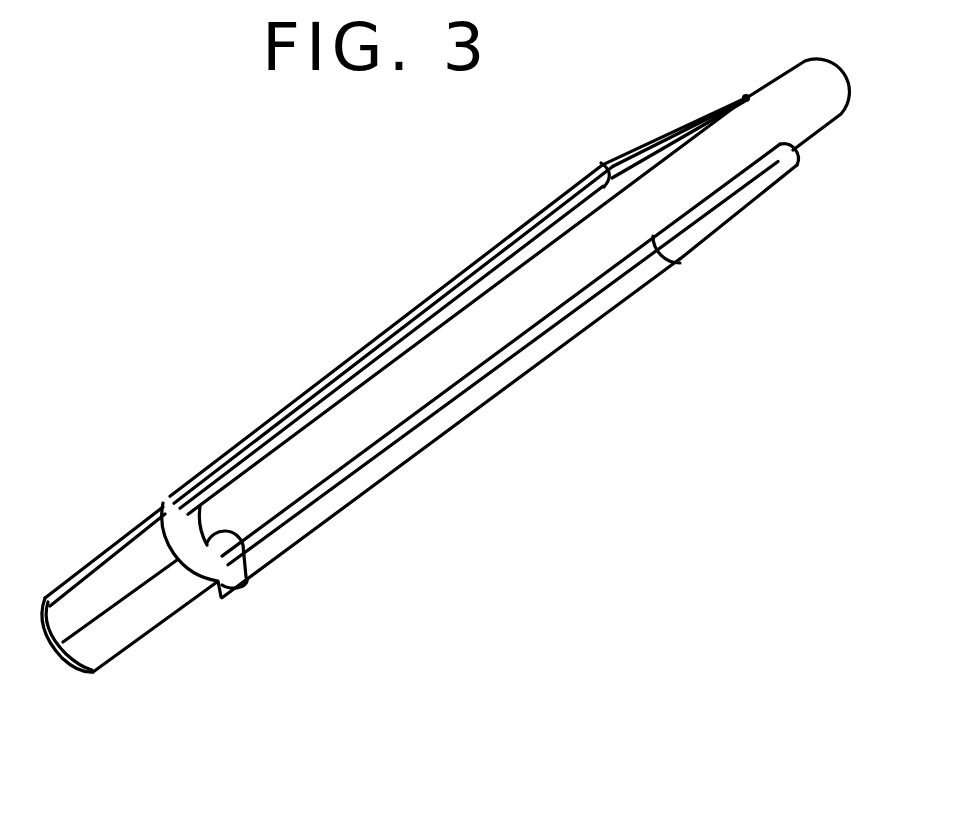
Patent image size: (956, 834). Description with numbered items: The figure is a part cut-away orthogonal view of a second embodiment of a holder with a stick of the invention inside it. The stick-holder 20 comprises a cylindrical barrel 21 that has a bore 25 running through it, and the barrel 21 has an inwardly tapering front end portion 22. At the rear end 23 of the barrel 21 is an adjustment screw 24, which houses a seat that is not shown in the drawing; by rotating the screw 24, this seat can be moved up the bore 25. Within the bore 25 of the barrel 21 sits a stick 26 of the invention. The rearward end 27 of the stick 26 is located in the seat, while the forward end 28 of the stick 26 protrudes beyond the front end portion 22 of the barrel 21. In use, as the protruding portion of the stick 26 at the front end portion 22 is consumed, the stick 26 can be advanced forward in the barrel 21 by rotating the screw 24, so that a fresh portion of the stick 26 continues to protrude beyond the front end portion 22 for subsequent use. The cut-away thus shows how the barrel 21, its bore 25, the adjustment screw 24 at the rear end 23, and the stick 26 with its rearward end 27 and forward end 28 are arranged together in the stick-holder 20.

The stick-holder 20 is at (432, 467).
The cylindrical barrel 21 is at (362, 356).
The front end portion 22 is at (735, 197).
The rear end 23 is at (178, 500).
The adjustment screw 24 is at (130, 625).
The bore 25 is at (517, 263).
The stick 26 is at (478, 348).
The rearward end 27 is at (213, 535).
The forward end 28 is at (792, 91).